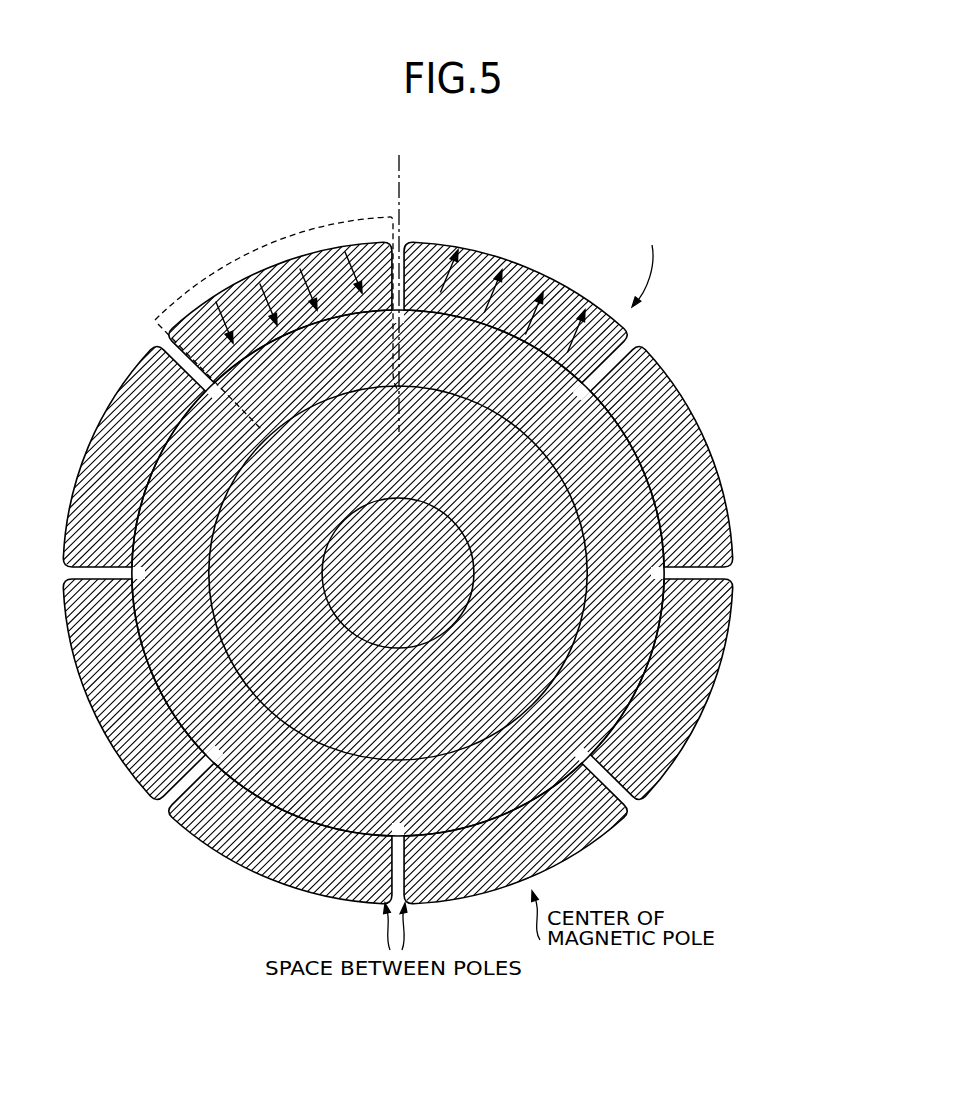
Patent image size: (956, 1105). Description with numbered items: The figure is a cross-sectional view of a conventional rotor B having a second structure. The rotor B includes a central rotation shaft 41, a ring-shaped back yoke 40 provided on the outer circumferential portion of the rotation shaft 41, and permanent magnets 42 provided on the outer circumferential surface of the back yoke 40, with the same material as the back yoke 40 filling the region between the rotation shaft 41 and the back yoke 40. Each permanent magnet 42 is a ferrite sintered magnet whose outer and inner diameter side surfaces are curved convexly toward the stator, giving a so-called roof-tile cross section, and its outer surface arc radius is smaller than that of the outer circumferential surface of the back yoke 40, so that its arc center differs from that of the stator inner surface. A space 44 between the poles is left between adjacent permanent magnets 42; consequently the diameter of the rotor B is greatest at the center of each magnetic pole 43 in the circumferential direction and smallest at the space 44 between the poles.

The back yoke 40 is at (622, 652).
The rotation shaft 41 is at (412, 592).
The permanent magnet 42 is at (690, 452).
The magnetic pole 43 is at (350, 212).
The space between the poles 44 is at (406, 181).
The rotor B is at (647, 263).